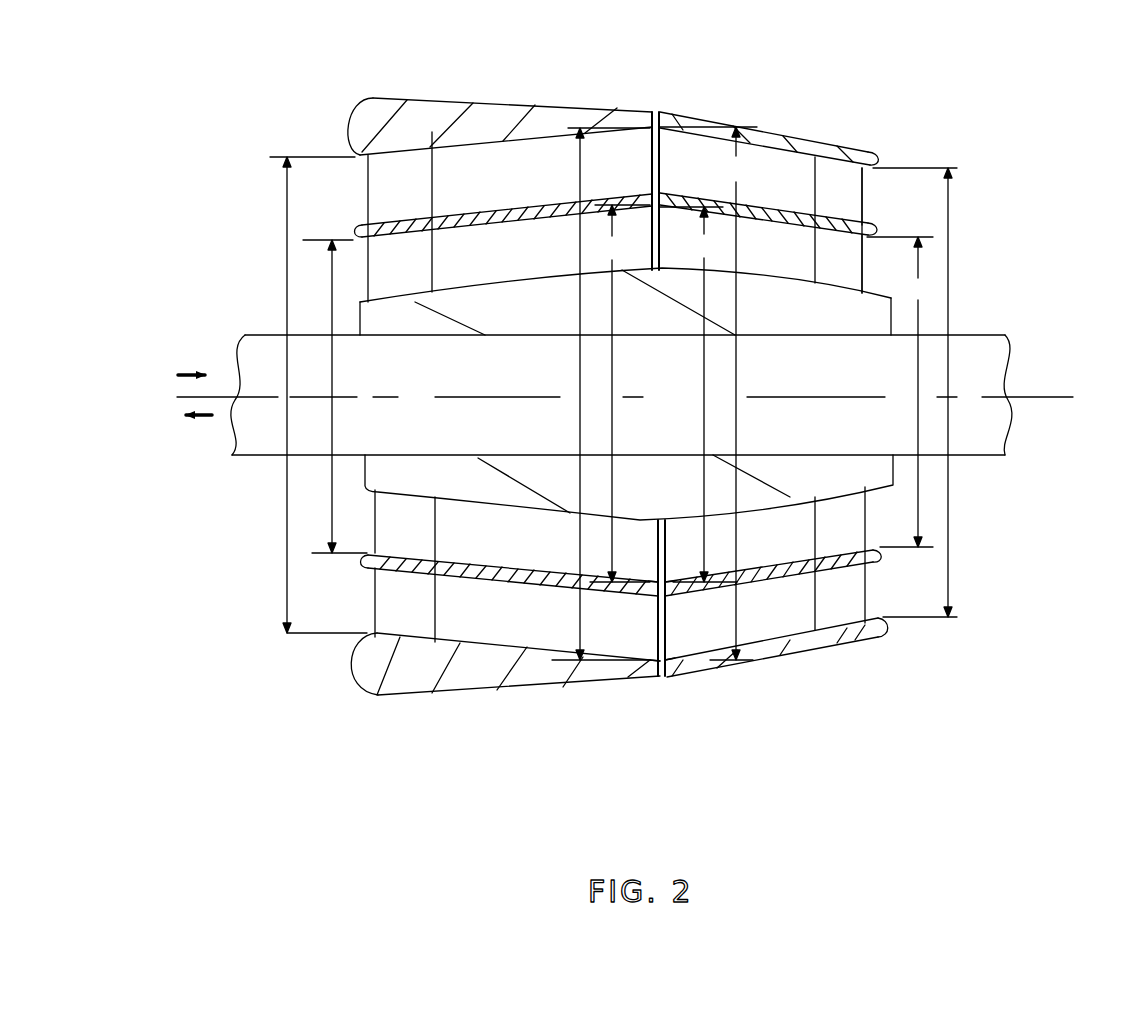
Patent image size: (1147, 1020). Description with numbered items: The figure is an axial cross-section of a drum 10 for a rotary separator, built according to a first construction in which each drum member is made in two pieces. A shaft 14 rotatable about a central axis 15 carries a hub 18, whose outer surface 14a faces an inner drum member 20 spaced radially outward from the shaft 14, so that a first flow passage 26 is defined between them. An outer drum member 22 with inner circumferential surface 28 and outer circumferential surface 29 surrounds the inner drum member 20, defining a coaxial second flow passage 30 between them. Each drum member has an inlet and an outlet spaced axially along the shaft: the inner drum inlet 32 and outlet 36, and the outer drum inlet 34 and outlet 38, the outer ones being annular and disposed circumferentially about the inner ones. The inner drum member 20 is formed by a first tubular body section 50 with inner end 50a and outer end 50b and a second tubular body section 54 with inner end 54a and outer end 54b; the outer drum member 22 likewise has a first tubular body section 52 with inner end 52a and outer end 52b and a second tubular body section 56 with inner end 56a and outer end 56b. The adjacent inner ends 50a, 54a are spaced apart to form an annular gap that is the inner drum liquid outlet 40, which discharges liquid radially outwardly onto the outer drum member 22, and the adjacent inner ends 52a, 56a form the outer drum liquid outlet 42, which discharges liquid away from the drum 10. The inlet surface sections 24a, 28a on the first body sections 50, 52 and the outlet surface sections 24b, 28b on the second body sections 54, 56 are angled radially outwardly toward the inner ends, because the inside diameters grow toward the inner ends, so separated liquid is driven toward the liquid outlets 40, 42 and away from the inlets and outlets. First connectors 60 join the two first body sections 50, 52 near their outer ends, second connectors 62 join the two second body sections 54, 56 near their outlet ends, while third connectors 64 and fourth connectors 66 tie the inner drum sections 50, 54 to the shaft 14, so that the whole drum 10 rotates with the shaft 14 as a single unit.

The drum 10 is at (188, 162).
The shaft 14 is at (1007, 330).
The outer surface of the shaft 14a is at (518, 284).
The central axis 15 is at (1057, 390).
The hub 18 is at (625, 307).
The inner drum member 20 is at (353, 211).
The outer drum member 22 is at (316, 86).
The inlet section of the inner drum member inner surface 24a is at (452, 236).
The outlet section of the inner drum member inner surface 24b is at (764, 225).
The first flow passage 26 is at (500, 533).
The inner circumferential surface of the outer drum member 28 is at (520, 148).
The inlet section of the outer drum member inner surface 28a is at (461, 147).
The outlet section of the outer drum member inner surface 28b is at (783, 148).
The outer circumferential surface of the outer drum member 29 is at (522, 96).
The second flow passage 30 is at (528, 634).
The inlet of the inner drum member 32 is at (362, 533).
The inlet of the outer drum member 34 is at (364, 605).
The outlet of the inner drum member 36 is at (872, 267).
The outlet of the outer drum member 38 is at (873, 200).
The liquid outlet opening of the inner drum member 40 is at (658, 238).
The liquid outlet opening of the outer drum member 42 is at (658, 162).
The first tubular body section of the inner drum member 50 is at (472, 575).
The inner end of the inner drum first body section 50a is at (664, 590).
The outer end of the inner drum first body section 50b is at (368, 558).
The first tubular body section of the outer drum member 52 is at (477, 684).
The inner end of the outer drum first body section 52a is at (670, 671).
The outer end of the outer drum first body section 52b is at (355, 668).
The second tubular body section of the inner drum member 54 is at (777, 573).
The inner end of the inner drum second body section 54a is at (660, 598).
The outer end of the inner drum second body section 54b is at (873, 556).
The second tubular body section of the outer drum member 56 is at (804, 641).
The inner end of the outer drum second body section 56a is at (662, 677).
The outer end of the outer drum second body section 56b is at (882, 628).
The first connector 60 is at (398, 173).
The second connector 62 is at (832, 167).
The third connector 64 is at (398, 310).
The fourth connector 66 is at (833, 277).